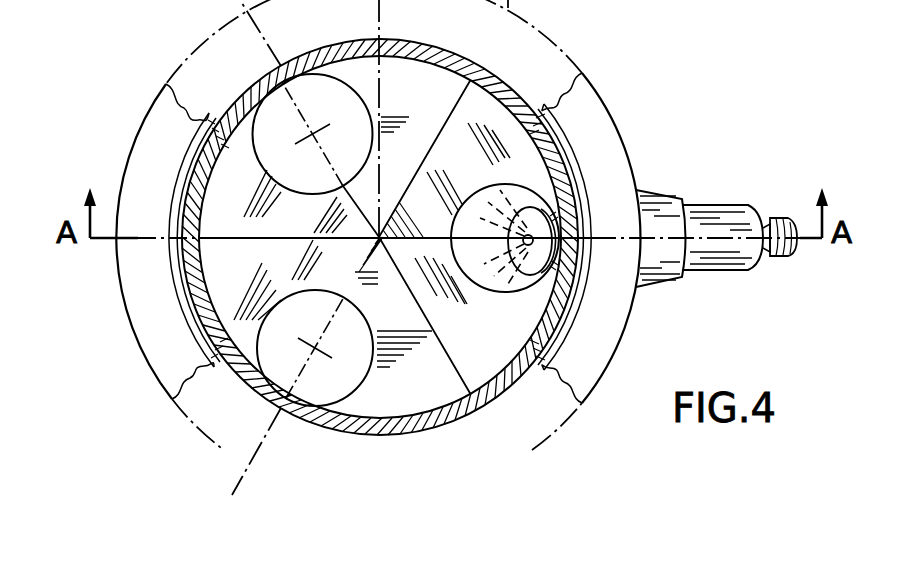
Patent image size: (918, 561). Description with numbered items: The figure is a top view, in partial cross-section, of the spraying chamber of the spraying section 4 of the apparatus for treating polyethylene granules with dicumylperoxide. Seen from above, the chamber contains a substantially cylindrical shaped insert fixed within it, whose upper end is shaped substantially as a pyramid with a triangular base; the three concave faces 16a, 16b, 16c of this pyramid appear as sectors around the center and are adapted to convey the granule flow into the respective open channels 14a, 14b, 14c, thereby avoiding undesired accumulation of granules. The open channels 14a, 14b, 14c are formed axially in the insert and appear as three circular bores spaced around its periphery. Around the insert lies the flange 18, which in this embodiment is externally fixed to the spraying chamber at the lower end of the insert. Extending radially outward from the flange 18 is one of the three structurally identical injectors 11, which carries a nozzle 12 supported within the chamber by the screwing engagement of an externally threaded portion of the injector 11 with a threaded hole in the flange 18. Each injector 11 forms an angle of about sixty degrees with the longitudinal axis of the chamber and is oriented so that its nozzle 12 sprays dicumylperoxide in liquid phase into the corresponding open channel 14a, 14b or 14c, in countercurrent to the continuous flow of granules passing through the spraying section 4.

The spraying section 4 is at (226, 60).
The injector 11 is at (706, 182).
The nozzle 12 is at (538, 222).
The open channel 14a is at (522, 186).
The open channel 14b is at (325, 386).
The open channel 14c is at (317, 96).
The concave face 16a is at (492, 352).
The concave face 16b is at (418, 397).
The concave face 16c is at (412, 92).
The flange 18 is at (628, 331).